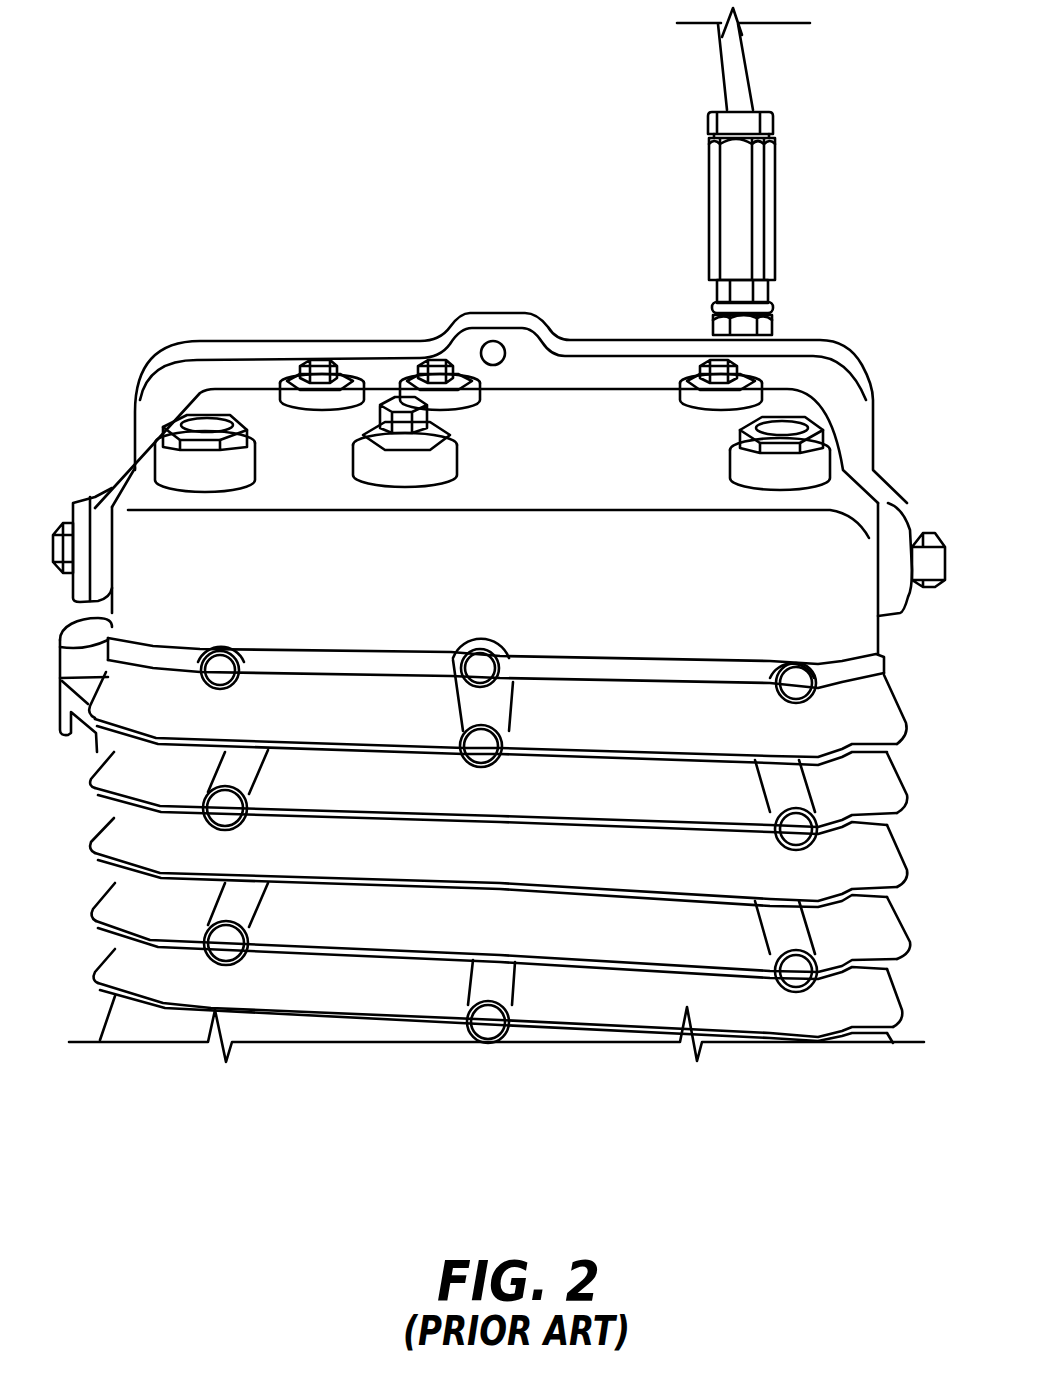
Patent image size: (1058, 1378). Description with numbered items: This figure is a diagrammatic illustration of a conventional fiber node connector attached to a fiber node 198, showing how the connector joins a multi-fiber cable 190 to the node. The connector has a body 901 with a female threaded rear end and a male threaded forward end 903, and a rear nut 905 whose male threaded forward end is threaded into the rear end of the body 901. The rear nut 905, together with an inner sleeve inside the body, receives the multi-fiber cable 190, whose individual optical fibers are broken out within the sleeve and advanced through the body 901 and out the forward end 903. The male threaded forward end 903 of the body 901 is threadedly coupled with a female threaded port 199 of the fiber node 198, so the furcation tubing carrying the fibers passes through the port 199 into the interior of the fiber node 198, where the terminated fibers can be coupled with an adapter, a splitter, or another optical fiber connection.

The multi-fiber cable 190 is at (745, 75).
The rear nut 905 is at (712, 125).
The body 901 is at (772, 212).
The male threaded forward end 903 is at (775, 308).
The female threaded port 199 is at (710, 333).
The fiber node 198 is at (873, 365).